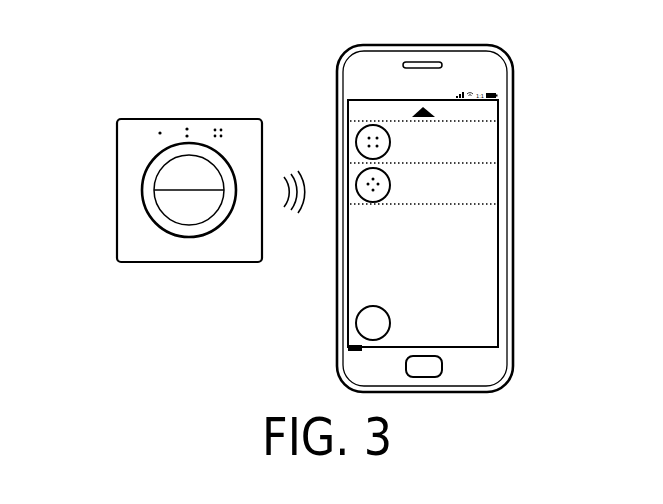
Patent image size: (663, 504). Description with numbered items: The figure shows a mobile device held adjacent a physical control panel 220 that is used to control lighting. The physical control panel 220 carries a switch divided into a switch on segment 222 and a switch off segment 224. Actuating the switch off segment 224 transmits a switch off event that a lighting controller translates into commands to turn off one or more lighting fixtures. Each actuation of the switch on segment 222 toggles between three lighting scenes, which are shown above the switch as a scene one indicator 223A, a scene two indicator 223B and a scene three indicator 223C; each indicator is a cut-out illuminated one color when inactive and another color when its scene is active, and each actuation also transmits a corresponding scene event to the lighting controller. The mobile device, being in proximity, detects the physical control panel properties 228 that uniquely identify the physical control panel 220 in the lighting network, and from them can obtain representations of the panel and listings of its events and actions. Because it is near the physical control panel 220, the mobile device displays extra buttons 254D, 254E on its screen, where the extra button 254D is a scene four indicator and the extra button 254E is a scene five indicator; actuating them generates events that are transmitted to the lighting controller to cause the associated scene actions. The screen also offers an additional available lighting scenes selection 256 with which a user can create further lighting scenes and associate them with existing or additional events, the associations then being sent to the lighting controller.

The physical control panel 220 is at (133, 262).
The switch on segment 222 is at (158, 183).
The switch off segment 224 is at (158, 197).
The scene one indicator 223A is at (157, 118).
The scene two indicator 223B is at (187, 118).
The scene three indicator 223C is at (217, 118).
The physical control panel properties 228 is at (292, 222).
The extra button 254D is at (452, 142).
The extra button 254E is at (452, 185).
The additional available lighting scenes selection 256 is at (465, 313).